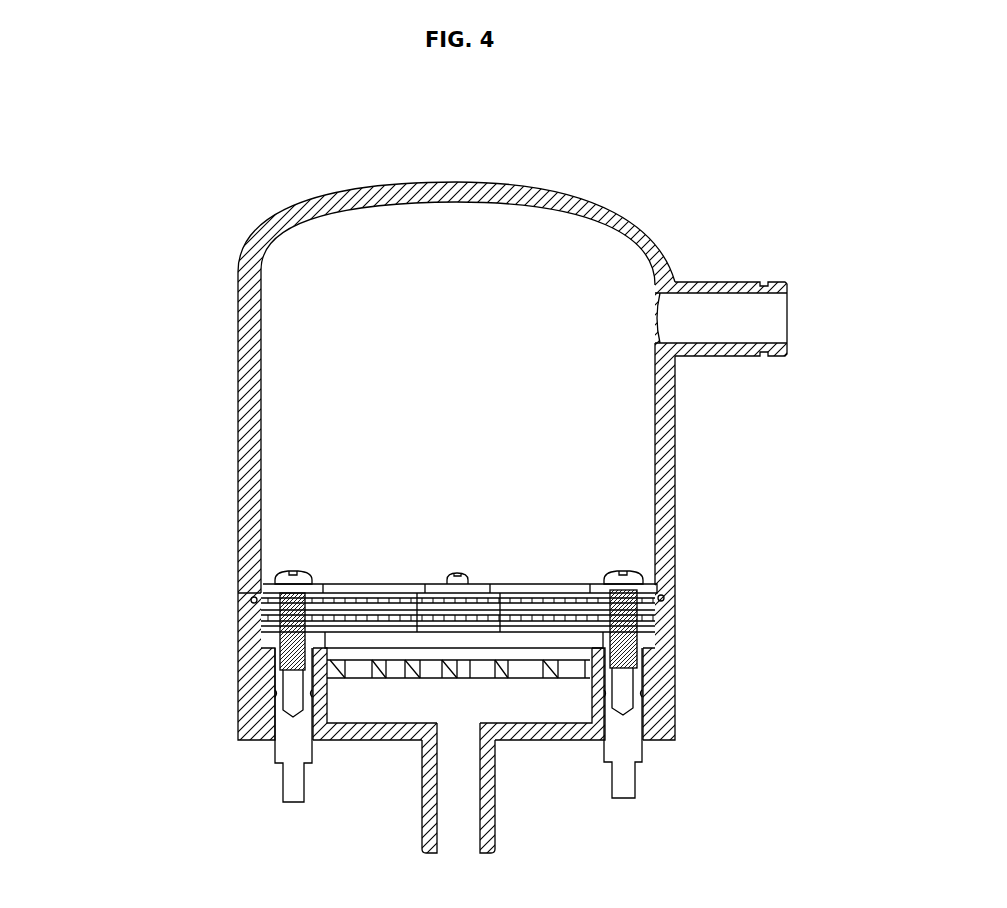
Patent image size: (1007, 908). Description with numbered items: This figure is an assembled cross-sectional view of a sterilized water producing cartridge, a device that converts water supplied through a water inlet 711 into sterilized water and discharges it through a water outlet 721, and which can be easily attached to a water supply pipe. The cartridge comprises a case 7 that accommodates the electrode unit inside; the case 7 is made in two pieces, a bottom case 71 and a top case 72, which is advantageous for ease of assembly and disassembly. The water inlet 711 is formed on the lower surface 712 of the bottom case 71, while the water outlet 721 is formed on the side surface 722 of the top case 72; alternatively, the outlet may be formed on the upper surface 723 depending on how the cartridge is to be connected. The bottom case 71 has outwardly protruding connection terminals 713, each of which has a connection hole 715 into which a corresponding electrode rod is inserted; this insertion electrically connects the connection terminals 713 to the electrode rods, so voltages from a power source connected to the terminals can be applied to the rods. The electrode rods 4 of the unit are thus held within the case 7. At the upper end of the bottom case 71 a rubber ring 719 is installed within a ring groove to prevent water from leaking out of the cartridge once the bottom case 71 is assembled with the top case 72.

The case 7 is at (110, 652).
The top case 72 is at (487, 342).
The upper surface 723 is at (535, 187).
The side surface 722 is at (676, 440).
The water outlet 721 is at (715, 282).
The bottom case 71 is at (390, 725).
The water inlet 711 is at (497, 820).
The lower surface 712 is at (345, 740).
The connection terminals 713 is at (273, 753).
The connection hole 715 is at (295, 693).
The rubber ring 719 is at (665, 598).
The sensor assembly 4 is at (551, 577).